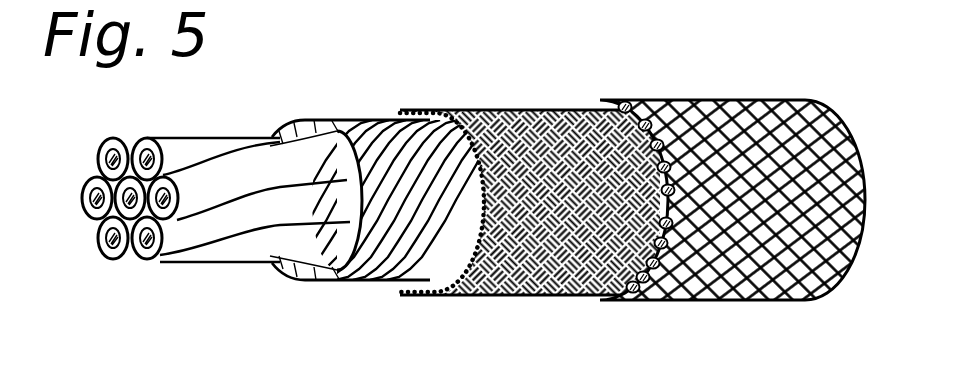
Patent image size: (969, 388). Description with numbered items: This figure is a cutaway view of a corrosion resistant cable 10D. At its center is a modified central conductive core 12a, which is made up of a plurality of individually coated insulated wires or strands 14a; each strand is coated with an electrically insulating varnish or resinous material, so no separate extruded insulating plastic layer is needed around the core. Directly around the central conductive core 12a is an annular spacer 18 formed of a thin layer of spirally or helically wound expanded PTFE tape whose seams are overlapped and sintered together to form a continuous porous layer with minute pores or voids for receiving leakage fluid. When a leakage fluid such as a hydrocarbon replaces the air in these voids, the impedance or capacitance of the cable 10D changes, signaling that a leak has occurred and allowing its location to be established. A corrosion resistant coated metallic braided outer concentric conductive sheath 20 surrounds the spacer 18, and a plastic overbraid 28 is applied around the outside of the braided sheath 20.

The corrosion resistant cable 10D is at (470, 360).
The central conductive core 12a is at (190, 275).
The individually coated insulated wires or strands 14a is at (232, 177).
The annular spacer 18 is at (349, 131).
The braided outer concentric conductive sheath 20 is at (563, 100).
The plastic overbraid 28 is at (710, 100).